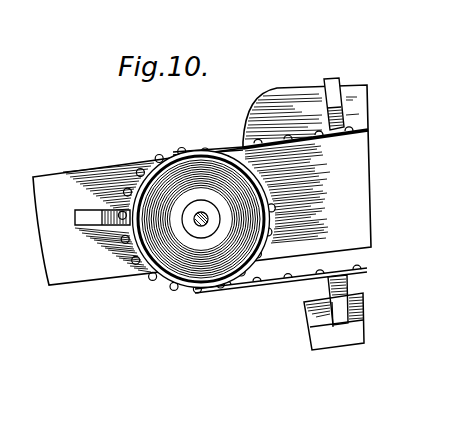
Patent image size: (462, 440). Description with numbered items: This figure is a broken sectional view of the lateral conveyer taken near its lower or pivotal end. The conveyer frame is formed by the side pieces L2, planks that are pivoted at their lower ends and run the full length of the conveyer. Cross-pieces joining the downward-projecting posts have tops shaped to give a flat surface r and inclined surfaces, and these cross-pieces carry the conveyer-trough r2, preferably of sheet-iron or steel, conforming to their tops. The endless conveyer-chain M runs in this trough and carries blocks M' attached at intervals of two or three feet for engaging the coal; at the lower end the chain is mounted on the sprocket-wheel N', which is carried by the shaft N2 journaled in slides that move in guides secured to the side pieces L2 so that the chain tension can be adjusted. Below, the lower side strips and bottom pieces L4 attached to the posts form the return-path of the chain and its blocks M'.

The side pieces L2 is at (58, 179).
The conveyer-chain M is at (187, 226).
The blocks M' is at (217, 159).
The flat surface r is at (322, 140).
The conveyer-trough r2 is at (297, 91).
The sprocket-wheel N' is at (201, 246).
The shaft N2 is at (160, 263).
The lower side strips and bottom pieces L4 is at (341, 338).